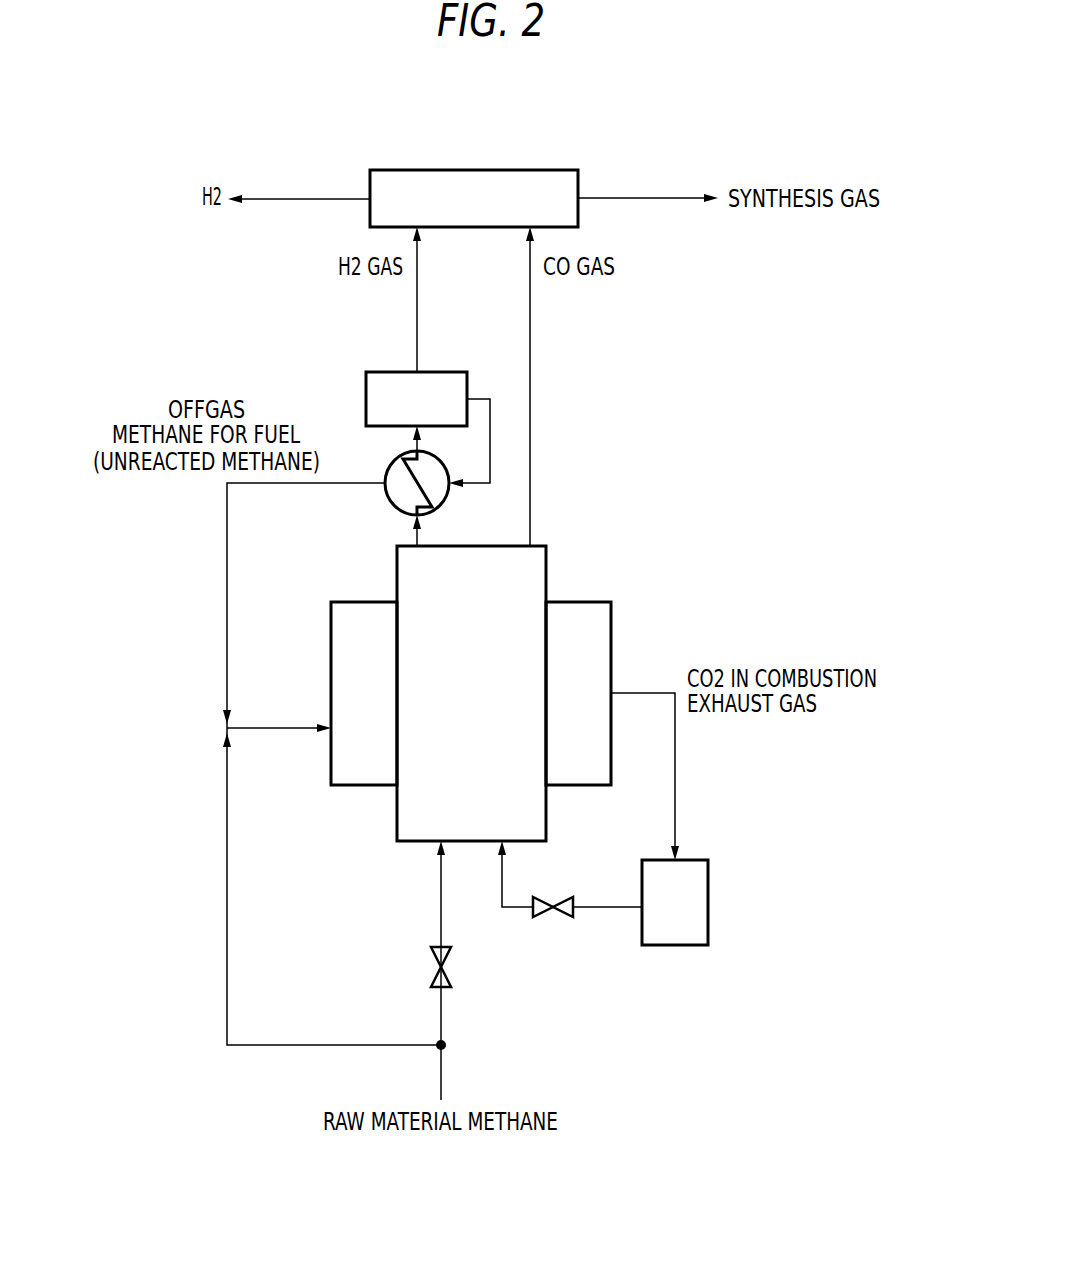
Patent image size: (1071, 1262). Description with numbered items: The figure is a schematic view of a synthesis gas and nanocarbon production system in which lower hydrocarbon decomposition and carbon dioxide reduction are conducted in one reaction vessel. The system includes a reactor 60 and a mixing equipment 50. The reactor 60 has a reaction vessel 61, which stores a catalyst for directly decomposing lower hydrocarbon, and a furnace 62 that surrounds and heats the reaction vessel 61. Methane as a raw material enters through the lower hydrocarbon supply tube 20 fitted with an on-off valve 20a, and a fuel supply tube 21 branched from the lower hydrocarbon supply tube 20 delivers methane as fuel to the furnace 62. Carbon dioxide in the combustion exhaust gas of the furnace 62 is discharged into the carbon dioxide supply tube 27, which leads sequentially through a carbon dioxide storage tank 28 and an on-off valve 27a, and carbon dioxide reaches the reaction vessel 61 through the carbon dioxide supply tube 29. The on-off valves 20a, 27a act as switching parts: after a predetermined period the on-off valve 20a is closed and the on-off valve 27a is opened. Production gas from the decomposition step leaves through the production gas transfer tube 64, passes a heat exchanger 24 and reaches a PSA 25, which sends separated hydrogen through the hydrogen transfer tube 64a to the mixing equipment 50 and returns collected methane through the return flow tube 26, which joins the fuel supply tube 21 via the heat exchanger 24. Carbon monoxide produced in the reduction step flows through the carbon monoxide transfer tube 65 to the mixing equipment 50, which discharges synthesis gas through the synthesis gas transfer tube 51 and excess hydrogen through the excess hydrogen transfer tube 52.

The lower hydrocarbon supply tube 20 is at (441, 1022).
The on-off valve 20a is at (431, 975).
The fuel supply tube 21 is at (227, 834).
The heat exchanger 24 is at (386, 470).
The PSA 25 is at (450, 372).
The return flow tube 26 is at (480, 483).
The carbon dioxide supply tube 27 is at (675, 800).
The on-off valve 27a is at (560, 898).
The carbon dioxide storage tank 28 is at (708, 905).
The carbon dioxide supply tube 29 is at (612, 908).
The mixing equipment 50 is at (515, 170).
The synthesis gas transfer tube 51 is at (650, 198).
The excess hydrogen transfer tube 52 is at (300, 199).
The reactor 60 is at (353, 848).
The reaction vessel 61 is at (546, 565).
The furnace 62 is at (611, 636).
The production gas transfer tube 64 is at (417, 527).
The hydrogen transfer tube 64a is at (417, 343).
The carbon monoxide transfer tube 65 is at (530, 437).